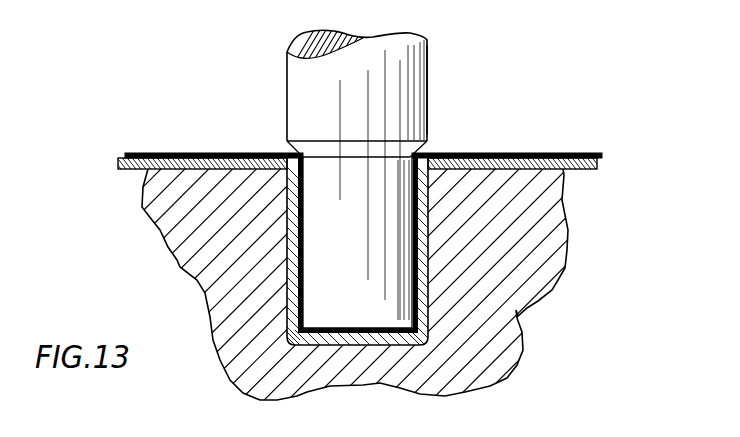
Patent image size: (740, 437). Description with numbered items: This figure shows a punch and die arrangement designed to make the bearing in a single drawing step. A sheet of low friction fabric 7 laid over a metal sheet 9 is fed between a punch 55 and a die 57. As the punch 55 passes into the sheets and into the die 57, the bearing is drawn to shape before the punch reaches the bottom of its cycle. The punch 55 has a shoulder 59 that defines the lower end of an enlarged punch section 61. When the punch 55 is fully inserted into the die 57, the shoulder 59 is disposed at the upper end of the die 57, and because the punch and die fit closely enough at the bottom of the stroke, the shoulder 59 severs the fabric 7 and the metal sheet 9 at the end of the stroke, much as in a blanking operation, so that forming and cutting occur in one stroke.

The punch 55 is at (410, 57).
The enlarged punch section 61 is at (428, 85).
The shoulder 59 is at (295, 157).
The sheet of low friction fabric 7 is at (133, 153).
The metal sheet 9 is at (125, 167).
The die 57 is at (498, 307).